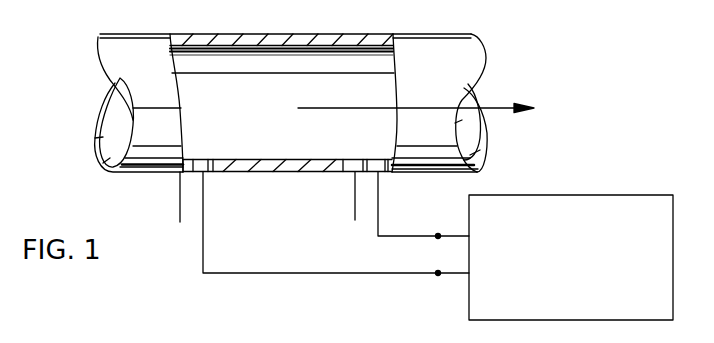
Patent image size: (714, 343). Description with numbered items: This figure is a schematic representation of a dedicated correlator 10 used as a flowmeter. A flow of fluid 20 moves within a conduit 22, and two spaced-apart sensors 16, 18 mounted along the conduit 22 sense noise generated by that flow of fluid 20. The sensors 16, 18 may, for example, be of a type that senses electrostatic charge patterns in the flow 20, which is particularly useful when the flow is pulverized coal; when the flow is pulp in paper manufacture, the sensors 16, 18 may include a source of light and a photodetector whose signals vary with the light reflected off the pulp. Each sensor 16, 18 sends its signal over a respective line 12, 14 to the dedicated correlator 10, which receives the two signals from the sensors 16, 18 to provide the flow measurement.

The dedicated correlator 10 is at (586, 195).
The line 12 is at (407, 237).
The line 14 is at (418, 275).
The sensor 16 is at (376, 159).
The sensor 18 is at (204, 159).
The flow of fluid 20 is at (308, 100).
The conduit 22 is at (115, 34).